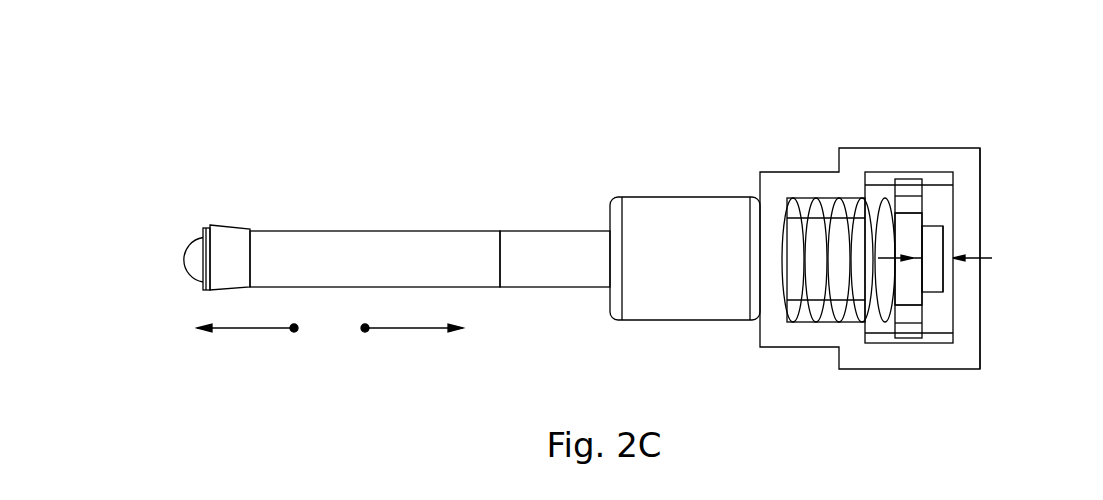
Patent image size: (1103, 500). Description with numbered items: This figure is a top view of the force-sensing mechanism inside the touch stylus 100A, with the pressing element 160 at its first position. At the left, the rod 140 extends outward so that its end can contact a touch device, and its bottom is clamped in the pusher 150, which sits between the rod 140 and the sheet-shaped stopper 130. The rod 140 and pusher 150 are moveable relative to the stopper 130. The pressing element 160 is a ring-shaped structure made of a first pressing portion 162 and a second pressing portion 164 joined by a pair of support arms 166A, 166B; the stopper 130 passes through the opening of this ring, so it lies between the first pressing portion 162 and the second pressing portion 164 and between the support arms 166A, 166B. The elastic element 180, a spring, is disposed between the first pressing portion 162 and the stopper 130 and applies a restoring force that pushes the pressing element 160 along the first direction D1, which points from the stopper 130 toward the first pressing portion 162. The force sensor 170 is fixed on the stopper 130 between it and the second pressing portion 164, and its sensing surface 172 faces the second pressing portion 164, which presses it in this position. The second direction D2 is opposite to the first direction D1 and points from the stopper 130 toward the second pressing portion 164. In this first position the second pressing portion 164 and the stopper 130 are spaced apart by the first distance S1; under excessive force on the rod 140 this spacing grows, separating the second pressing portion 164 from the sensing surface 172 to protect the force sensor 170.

The touch stylus 100A is at (167, 98).
The stopper 130 is at (903, 292).
The rod 140 is at (368, 252).
The pusher 150 is at (670, 225).
The pressing element 160 is at (758, 50).
The first pressing portion 162 is at (768, 210).
The second pressing portion 164 is at (968, 247).
The support arm 166A is at (882, 160).
The support arm 166B is at (930, 356).
The force sensor 170 is at (933, 283).
The sensing surface 172 is at (963, 298).
The elastic element 180 is at (803, 317).
The first distance S1 is at (930, 262).
The first direction D1 is at (242, 328).
The second direction D2 is at (410, 328).